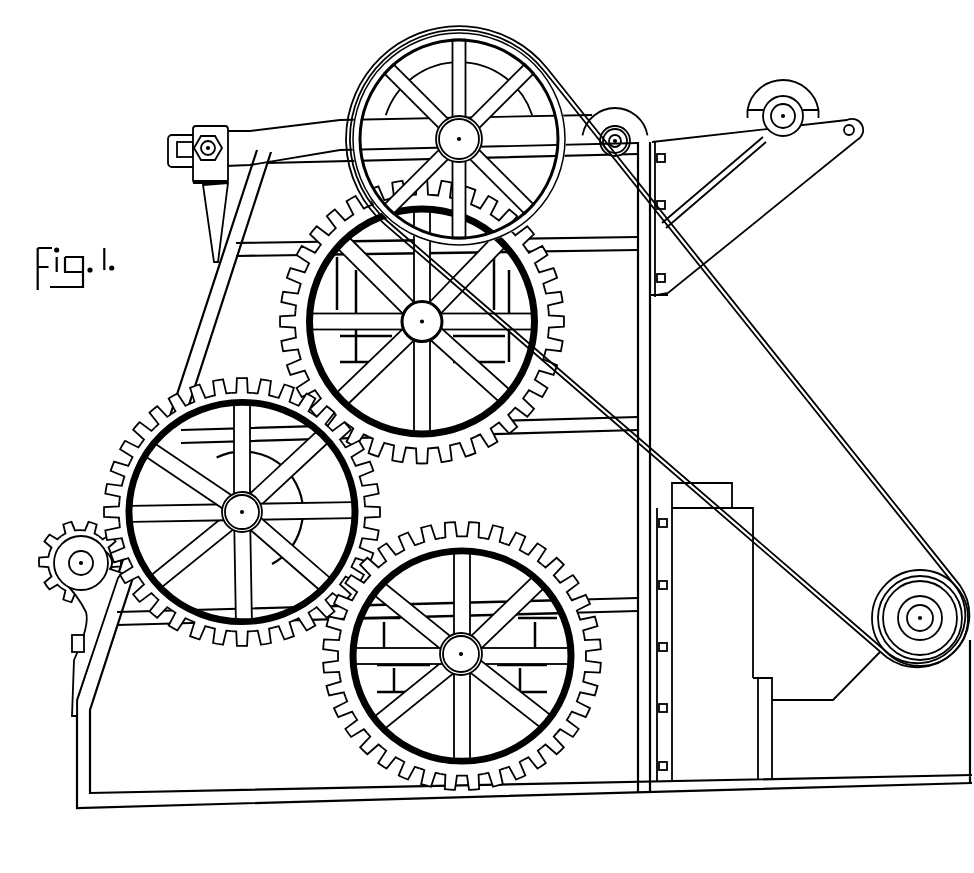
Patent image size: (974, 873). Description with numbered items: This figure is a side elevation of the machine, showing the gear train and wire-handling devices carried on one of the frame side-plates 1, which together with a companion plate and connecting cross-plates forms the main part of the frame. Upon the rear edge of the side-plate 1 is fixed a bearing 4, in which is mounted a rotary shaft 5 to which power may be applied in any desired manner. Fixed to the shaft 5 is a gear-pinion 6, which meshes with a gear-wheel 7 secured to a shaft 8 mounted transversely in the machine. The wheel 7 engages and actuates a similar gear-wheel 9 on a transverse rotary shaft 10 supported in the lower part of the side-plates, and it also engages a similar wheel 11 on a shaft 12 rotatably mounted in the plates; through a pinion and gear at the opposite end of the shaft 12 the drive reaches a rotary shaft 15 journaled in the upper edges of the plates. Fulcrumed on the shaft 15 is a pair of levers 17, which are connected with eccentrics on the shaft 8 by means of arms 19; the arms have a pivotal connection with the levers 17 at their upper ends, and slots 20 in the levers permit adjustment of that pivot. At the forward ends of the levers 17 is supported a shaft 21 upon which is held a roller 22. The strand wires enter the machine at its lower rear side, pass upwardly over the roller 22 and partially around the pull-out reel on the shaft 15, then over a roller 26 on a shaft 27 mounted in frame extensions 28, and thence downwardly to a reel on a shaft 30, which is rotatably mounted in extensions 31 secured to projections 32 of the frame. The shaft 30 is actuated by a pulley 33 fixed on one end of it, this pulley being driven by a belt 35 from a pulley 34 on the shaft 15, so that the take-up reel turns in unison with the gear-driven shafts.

The side-plate 1 is at (226, 303).
The bearing 4 is at (92, 600).
The rotary shaft 5 is at (74, 563).
The gear-pinion 6 is at (63, 528).
The gear-wheel 7 is at (150, 424).
The shaft 8 is at (238, 525).
The gear-wheel 9 is at (336, 674).
The transverse rotary shaft 10 is at (466, 668).
The gear-wheel 11 is at (492, 417).
The shaft 12 is at (418, 334).
The rotary shaft 15 is at (450, 146).
The levers 17 is at (311, 128).
The arms 19 is at (213, 222).
The slots 20 is at (197, 162).
The shaft 21 is at (630, 137).
The roller 22 is at (619, 112).
The roller 26 is at (803, 91).
The shaft 27 is at (781, 104).
The frame extensions 28 is at (808, 170).
The shaft 30 is at (916, 632).
The extensions 31 is at (807, 703).
The projections 32 is at (745, 557).
The pulley 33 is at (897, 587).
The pulley 34 is at (550, 85).
The belt 35 is at (789, 364).